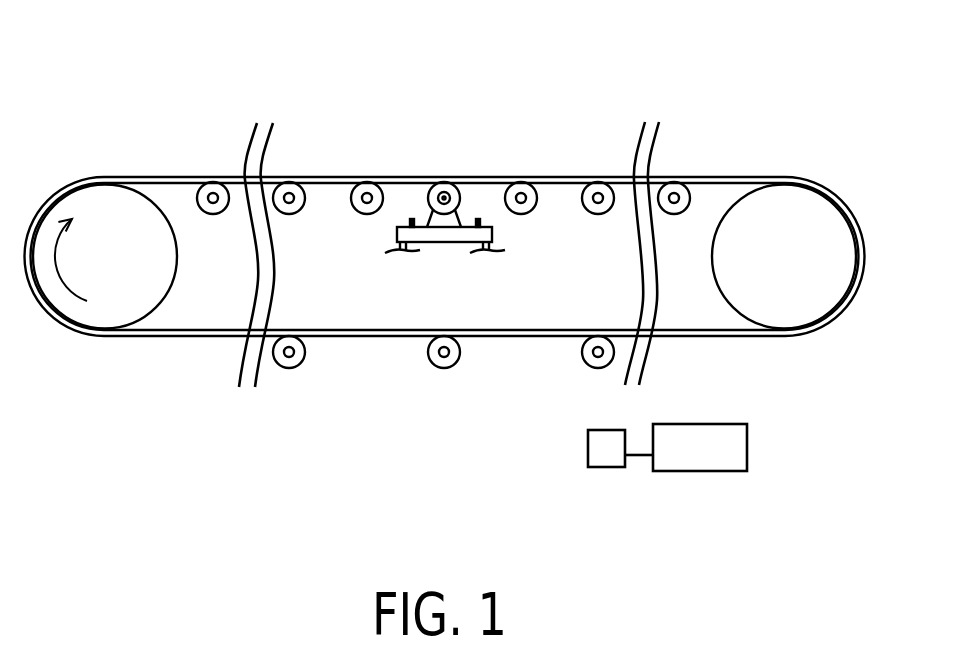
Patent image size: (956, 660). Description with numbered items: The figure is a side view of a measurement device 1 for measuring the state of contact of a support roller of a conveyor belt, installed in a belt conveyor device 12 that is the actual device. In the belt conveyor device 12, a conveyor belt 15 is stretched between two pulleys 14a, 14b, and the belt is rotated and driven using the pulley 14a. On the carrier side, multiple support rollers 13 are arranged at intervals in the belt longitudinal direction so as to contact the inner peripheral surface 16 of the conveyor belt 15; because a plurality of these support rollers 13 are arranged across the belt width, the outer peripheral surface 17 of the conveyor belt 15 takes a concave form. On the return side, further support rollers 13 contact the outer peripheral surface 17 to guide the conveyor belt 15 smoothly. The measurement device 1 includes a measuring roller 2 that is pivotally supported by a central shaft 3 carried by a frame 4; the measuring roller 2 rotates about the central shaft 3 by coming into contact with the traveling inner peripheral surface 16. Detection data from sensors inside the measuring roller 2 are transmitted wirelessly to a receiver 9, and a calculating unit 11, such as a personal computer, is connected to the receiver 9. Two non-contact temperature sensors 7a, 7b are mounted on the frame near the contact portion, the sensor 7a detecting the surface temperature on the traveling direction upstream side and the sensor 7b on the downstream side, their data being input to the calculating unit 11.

The measurement device 1 is at (482, 108).
The measuring roller 2 is at (432, 185).
The central shaft 3 is at (447, 189).
The frame 4 is at (492, 233).
The temperature sensor 7a is at (408, 218).
The temperature sensor 7b is at (478, 218).
The receiver 9 is at (607, 458).
The calculating unit 11 is at (710, 462).
The belt conveyor device 12 is at (697, 165).
The support rollers 13 is at (287, 178).
The pulley 14a is at (91, 197).
The pulley 14b is at (803, 200).
The conveyor belt 15 is at (227, 176).
The inner peripheral surface 16 is at (310, 190).
The outer peripheral surface 17 is at (553, 177).